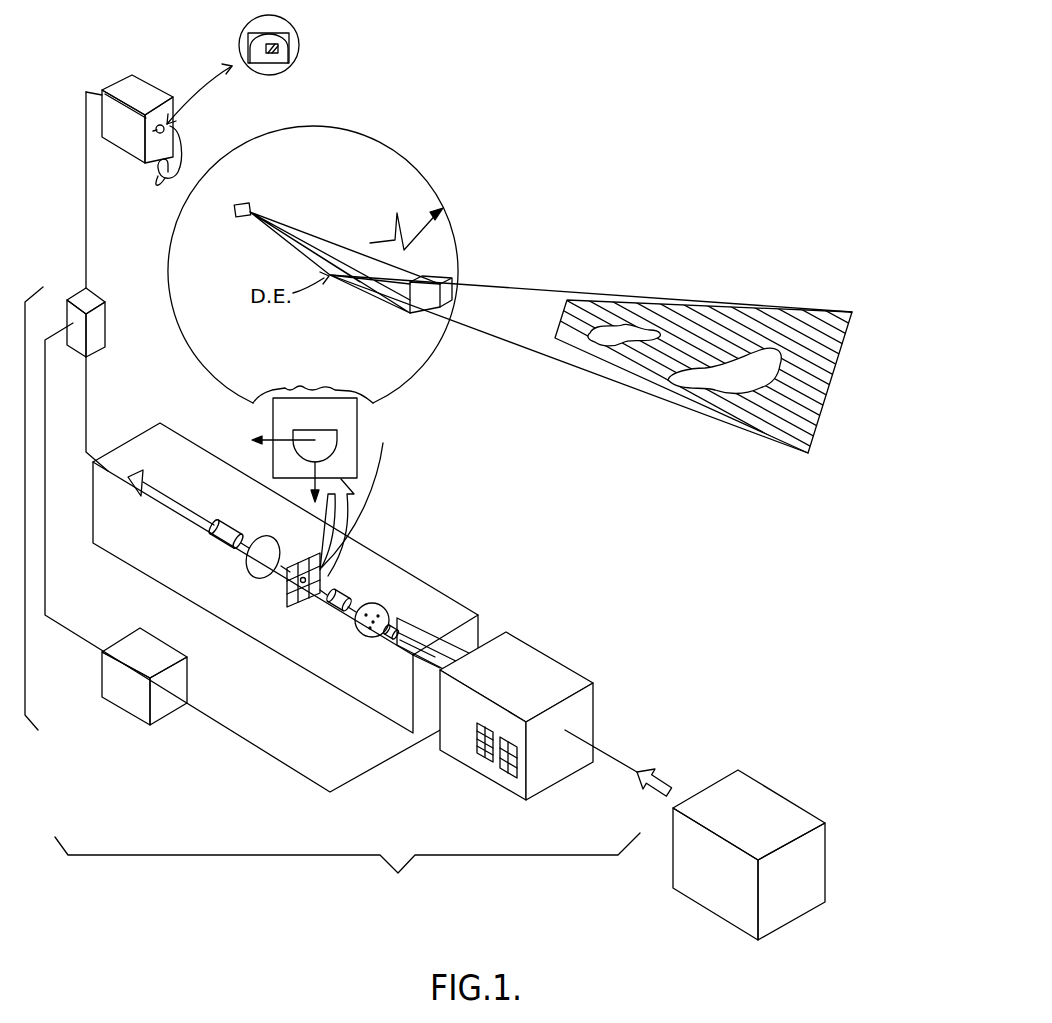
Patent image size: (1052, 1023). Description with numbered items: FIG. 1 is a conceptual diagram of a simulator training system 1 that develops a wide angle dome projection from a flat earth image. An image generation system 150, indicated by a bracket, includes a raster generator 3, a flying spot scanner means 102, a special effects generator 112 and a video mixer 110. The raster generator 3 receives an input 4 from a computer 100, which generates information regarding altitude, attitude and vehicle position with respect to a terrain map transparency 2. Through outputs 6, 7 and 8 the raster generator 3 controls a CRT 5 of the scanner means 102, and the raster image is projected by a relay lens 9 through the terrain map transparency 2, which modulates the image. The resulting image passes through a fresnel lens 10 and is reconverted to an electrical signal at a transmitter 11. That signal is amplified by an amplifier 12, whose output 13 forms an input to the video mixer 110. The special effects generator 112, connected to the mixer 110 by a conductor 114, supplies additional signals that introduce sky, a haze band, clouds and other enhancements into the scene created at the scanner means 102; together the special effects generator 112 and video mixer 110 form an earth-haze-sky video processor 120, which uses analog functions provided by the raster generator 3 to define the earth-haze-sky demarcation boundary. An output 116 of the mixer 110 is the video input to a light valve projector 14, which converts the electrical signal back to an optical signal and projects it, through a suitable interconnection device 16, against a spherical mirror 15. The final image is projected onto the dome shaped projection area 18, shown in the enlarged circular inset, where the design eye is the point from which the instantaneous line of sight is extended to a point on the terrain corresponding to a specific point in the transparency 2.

The simulator training system 1 is at (770, 592).
The terrain map transparency 2 is at (360, 433).
The raster generator 3 is at (548, 656).
The input 4 is at (607, 752).
The CRT 5 is at (387, 607).
The output 6 is at (403, 618).
The output 7 is at (408, 652).
The output 8 is at (423, 665).
The relay lens 9 is at (347, 600).
The fresnel lens 10 is at (258, 575).
The transmitter 11 is at (213, 545).
The amplifier 12 is at (145, 480).
The output 13 is at (87, 418).
The light valve projector 14 is at (140, 77).
The spherical mirror 15 is at (160, 176).
The interconnection device 16 is at (181, 148).
The dome shaped projection area 18 is at (445, 212).
The computer 100 is at (765, 805).
The flying spot scanner means 102 is at (312, 678).
The video mixer 110 is at (105, 327).
The special effects generator 112 is at (147, 708).
The conductor 114 is at (45, 603).
The output 116 is at (88, 250).
The earth-haze-sky (EHS) video processor 120 is at (24, 302).
The image generation system 150 is at (347, 874).